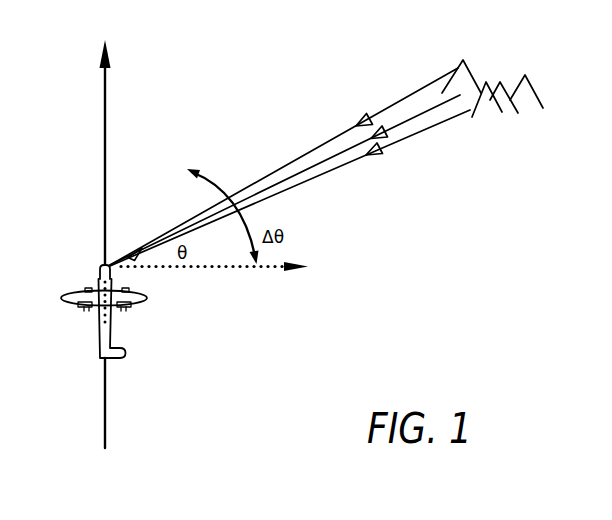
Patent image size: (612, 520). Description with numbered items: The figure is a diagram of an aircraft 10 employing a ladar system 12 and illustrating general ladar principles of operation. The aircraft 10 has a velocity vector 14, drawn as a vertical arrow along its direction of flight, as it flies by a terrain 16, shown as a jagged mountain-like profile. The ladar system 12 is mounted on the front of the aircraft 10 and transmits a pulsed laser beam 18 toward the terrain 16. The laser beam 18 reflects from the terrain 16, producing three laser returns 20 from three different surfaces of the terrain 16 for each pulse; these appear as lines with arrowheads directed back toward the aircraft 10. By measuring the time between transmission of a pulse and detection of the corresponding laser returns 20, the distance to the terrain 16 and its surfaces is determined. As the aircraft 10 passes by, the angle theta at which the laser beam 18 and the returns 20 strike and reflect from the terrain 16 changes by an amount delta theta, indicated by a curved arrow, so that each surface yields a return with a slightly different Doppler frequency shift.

The aircraft 10 is at (141, 312).
The ladar system 12 is at (103, 266).
The velocity vector 14 is at (105, 140).
The terrain 16 is at (462, 60).
The laser beam 18 is at (128, 255).
The laser returns 20 is at (405, 103).